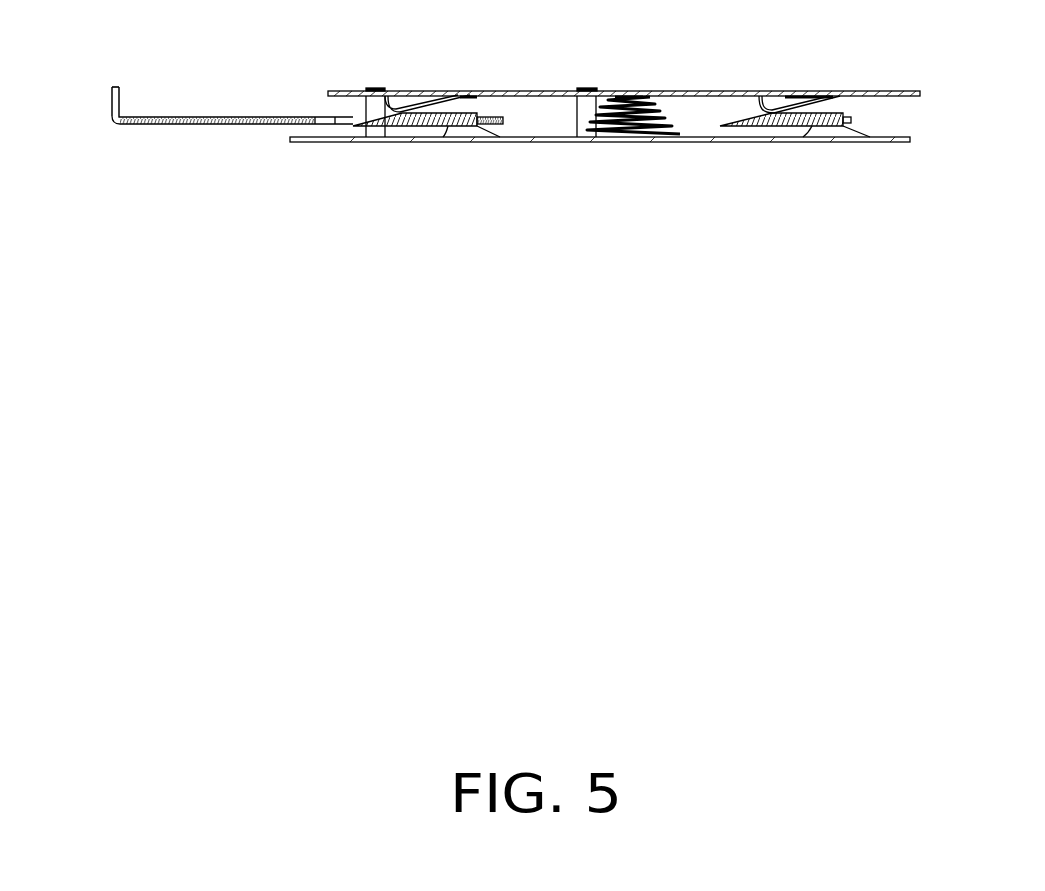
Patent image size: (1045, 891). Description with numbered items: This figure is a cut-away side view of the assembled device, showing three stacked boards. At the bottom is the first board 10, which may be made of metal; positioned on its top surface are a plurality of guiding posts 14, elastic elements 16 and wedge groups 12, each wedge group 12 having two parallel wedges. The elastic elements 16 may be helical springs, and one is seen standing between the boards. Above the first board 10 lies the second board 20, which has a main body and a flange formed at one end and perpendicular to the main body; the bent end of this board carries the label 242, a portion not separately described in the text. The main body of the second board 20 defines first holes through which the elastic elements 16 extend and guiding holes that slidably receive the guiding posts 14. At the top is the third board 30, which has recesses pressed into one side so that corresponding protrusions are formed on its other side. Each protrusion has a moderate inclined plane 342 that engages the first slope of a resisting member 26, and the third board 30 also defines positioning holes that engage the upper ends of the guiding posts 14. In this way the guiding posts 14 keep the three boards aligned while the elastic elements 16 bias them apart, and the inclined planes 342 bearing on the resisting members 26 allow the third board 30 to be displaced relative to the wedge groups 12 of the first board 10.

The first board 10 is at (883, 143).
The wedge group 12 is at (832, 132).
The guiding post 14 is at (586, 88).
The elastic element 16 is at (658, 138).
The second board 20 is at (194, 78).
The resisting member 26 is at (787, 122).
The third board 30 is at (880, 91).
The bent end flange 242 is at (112, 100).
The inclined plane 342 is at (424, 110).